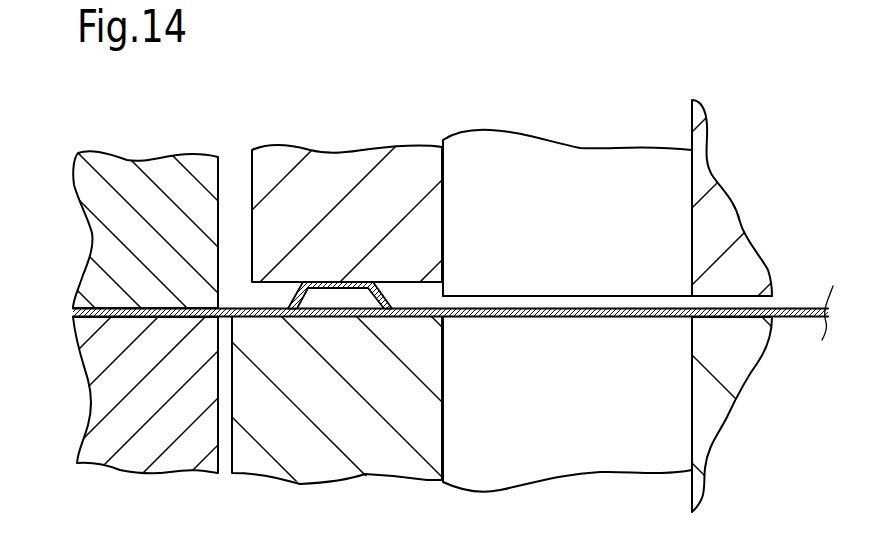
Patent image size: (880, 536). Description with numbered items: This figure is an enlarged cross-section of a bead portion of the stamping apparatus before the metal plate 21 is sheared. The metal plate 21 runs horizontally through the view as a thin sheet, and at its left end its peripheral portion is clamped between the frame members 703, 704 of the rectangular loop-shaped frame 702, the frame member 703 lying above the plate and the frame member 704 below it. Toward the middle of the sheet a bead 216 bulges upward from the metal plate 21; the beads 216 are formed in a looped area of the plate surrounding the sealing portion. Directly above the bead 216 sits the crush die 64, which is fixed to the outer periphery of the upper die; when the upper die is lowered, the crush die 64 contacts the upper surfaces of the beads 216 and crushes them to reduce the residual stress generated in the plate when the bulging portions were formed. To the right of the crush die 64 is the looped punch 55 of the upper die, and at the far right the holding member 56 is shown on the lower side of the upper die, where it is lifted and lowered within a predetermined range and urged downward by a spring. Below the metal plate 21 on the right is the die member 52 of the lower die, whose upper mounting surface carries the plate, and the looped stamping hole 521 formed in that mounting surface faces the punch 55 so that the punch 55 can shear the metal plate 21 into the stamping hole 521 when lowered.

The frame 702 is at (176, 284).
The frame member 703 is at (92, 238).
The frame member 704 is at (92, 401).
The crush die 64 is at (355, 159).
The metal plate 21 is at (283, 316).
The bead 216 is at (337, 282).
The punch 55 is at (492, 134).
The holding member 56 is at (733, 203).
The die member 52 is at (709, 415).
The stamping hole 521 is at (683, 405).